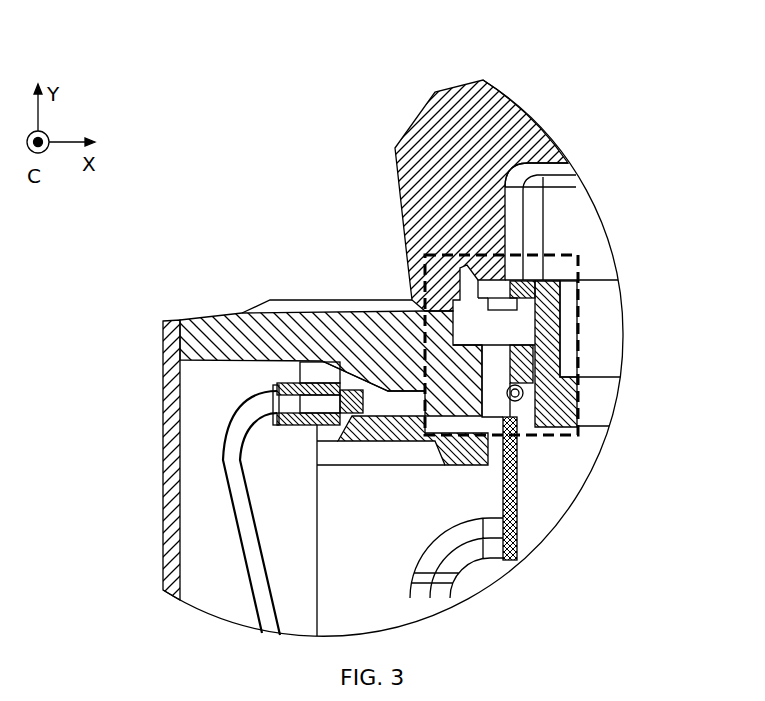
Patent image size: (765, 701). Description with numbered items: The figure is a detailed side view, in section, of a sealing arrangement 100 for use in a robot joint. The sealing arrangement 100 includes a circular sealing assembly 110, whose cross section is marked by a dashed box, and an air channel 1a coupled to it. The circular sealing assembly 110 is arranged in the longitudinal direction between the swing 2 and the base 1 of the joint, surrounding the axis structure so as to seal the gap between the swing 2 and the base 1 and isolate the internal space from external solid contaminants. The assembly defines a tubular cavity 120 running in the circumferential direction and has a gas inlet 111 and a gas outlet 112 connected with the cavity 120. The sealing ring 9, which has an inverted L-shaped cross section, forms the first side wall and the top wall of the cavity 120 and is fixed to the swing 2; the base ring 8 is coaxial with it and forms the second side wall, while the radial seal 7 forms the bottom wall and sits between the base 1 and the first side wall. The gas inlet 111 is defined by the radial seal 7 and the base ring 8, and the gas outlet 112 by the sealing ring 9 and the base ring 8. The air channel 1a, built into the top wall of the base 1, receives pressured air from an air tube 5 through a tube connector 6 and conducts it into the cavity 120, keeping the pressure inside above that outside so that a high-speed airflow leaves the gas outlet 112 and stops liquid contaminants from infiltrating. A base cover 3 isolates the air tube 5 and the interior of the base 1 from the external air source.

The sealing arrangement 100 is at (222, 65).
The base 1 is at (220, 334).
The air channel 1a is at (415, 350).
The swing 2 is at (447, 154).
The base cover 3 is at (166, 427).
The air tube 5 is at (248, 527).
The tube connector 6 is at (318, 385).
The radial seal 7 is at (560, 377).
The base ring 8 is at (440, 262).
The sealing ring 9 is at (578, 256).
The circular sealing assembly 110 is at (512, 441).
The gas inlet 111 is at (443, 336).
The gas outlet 112 is at (460, 257).
The tubular cavity 120 is at (498, 328).